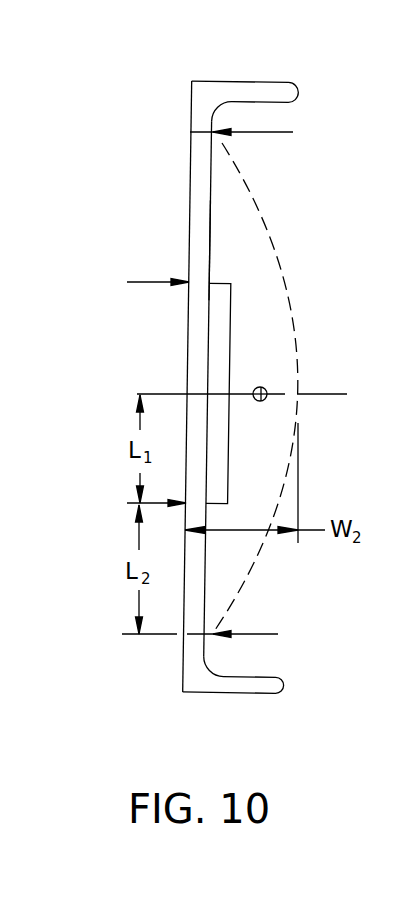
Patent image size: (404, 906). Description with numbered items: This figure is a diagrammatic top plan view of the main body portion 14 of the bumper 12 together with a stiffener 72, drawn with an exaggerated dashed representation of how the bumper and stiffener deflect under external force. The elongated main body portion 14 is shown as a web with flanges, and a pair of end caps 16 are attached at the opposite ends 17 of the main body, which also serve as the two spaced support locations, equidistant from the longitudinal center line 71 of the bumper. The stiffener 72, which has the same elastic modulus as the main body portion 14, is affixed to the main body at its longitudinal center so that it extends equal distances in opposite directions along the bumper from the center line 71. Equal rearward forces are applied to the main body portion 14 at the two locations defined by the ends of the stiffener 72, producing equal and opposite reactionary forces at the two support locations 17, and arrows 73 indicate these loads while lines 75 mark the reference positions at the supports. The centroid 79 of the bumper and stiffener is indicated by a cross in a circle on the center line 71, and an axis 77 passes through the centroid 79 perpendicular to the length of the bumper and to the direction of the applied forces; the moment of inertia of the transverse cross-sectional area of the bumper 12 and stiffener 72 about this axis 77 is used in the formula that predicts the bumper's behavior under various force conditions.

The bumper 12 is at (189, 202).
The main body portion 14 is at (212, 225).
The end caps 16 is at (245, 80).
The opposite ends 17 is at (222, 137).
The longitudinal center line 71 is at (150, 392).
The stiffener 72 is at (228, 472).
The load arrows 73 is at (143, 285).
The flange junction reference line 75 is at (283, 131).
The axis 77 is at (261, 401).
The centroid 79 is at (261, 387).